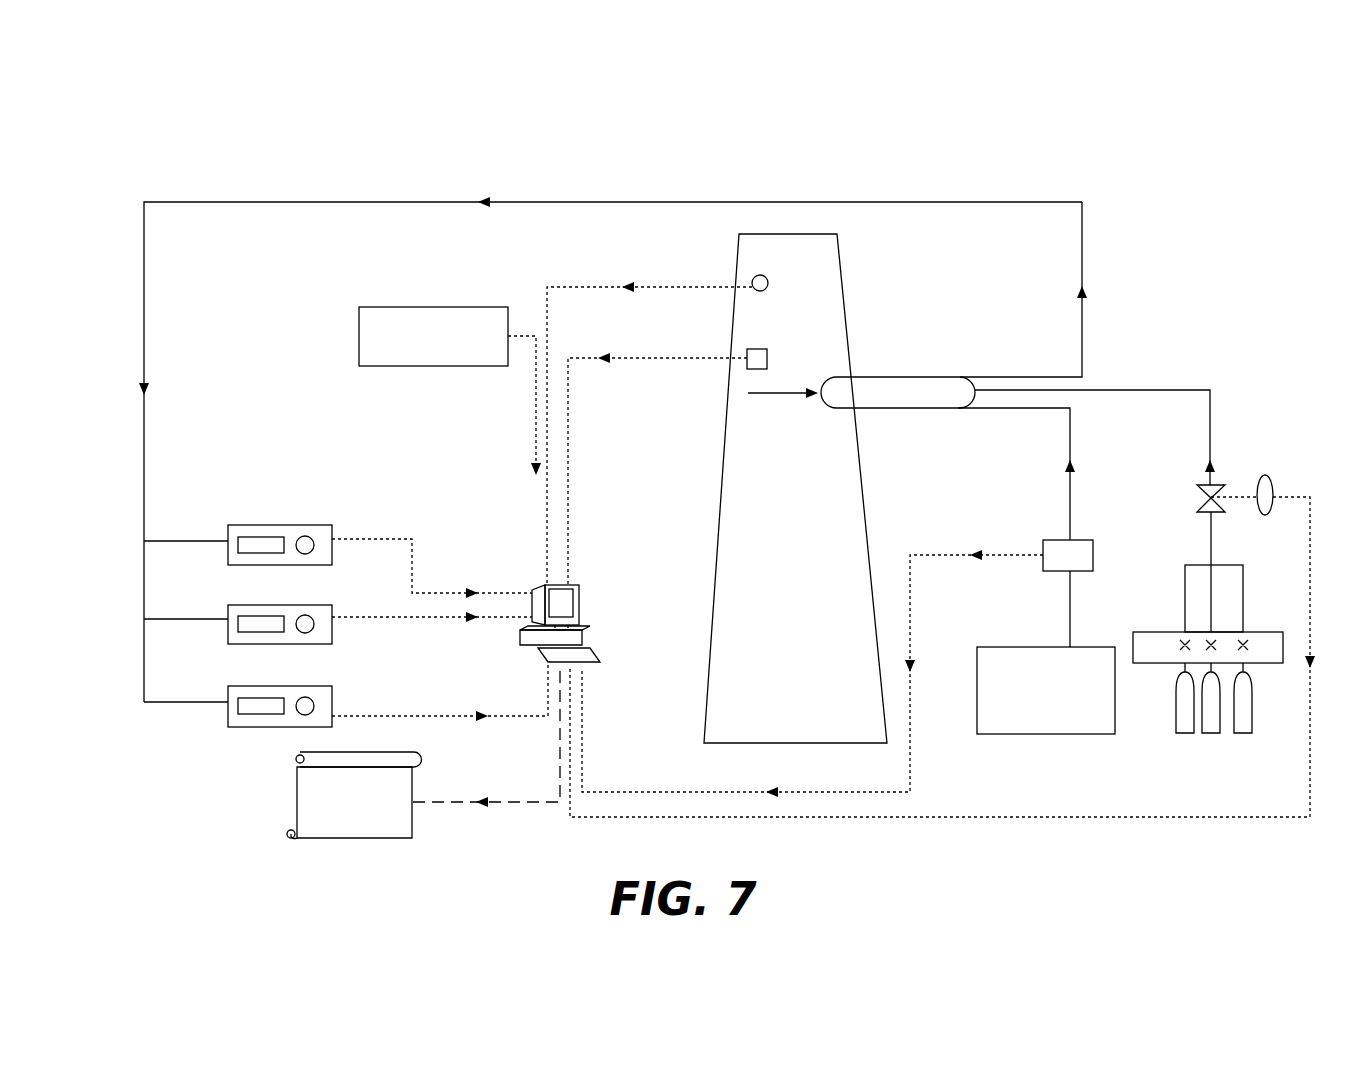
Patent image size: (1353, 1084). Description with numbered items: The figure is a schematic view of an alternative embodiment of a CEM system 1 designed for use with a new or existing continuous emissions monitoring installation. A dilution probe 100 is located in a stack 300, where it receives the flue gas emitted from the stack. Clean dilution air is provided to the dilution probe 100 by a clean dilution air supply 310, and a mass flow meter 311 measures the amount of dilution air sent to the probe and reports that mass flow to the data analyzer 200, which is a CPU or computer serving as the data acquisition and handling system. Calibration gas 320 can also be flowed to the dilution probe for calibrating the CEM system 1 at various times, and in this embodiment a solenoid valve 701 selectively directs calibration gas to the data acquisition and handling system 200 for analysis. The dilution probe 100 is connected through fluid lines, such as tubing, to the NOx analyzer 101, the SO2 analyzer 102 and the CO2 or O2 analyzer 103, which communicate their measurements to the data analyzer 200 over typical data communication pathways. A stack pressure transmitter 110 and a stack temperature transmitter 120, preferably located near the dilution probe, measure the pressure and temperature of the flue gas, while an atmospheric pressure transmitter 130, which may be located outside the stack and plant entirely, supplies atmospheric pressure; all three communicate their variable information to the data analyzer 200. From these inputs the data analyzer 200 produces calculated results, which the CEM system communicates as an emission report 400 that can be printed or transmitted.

The CEM system 1 is at (296, 168).
The dilution probe 100 is at (937, 377).
The stack pressure transmitter 110 is at (763, 349).
The stack temperature transmitter 120 is at (760, 275).
The atmospheric pressure transmitter 130 is at (359, 337).
The data analyzer 200 is at (580, 597).
The stack 300 is at (847, 283).
The NOx analyzer 101 is at (333, 530).
The SO2 analyzer 102 is at (333, 610).
The CO2 or O2 analyzer 103 is at (333, 712).
The clean dilution air supply 310 is at (1005, 735).
The mass flow meter 311 is at (1093, 545).
The calibration gas 320 is at (1185, 575).
The emission report 400 is at (297, 802).
The solenoid valve 701 is at (1270, 479).